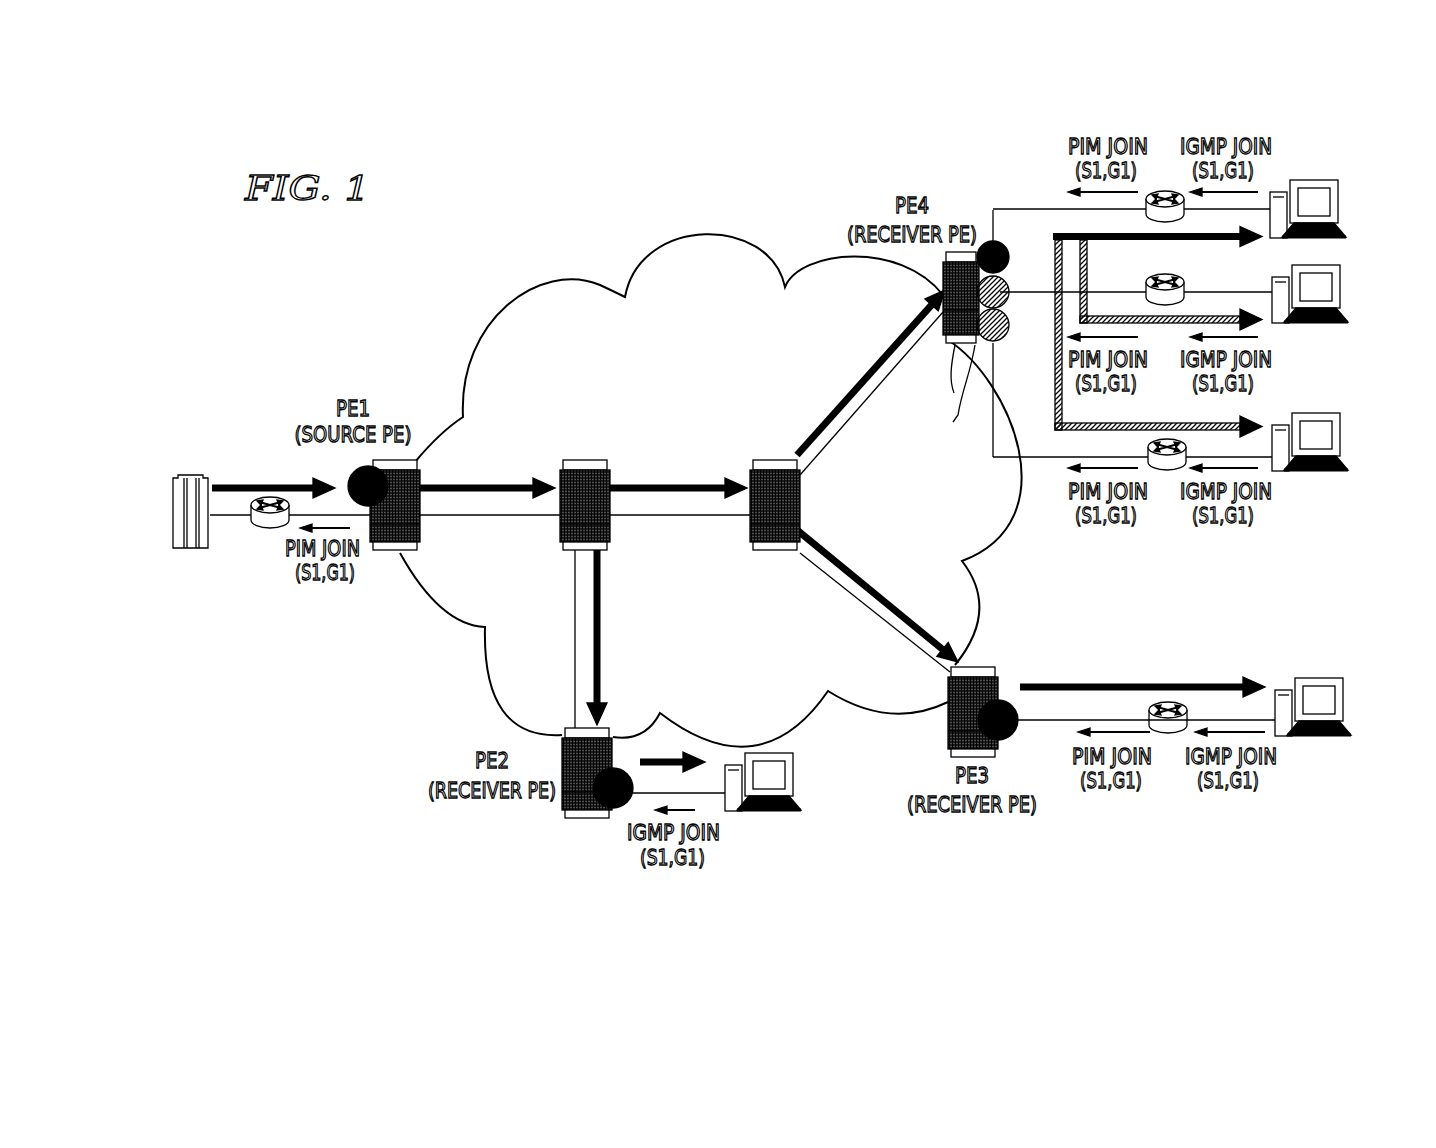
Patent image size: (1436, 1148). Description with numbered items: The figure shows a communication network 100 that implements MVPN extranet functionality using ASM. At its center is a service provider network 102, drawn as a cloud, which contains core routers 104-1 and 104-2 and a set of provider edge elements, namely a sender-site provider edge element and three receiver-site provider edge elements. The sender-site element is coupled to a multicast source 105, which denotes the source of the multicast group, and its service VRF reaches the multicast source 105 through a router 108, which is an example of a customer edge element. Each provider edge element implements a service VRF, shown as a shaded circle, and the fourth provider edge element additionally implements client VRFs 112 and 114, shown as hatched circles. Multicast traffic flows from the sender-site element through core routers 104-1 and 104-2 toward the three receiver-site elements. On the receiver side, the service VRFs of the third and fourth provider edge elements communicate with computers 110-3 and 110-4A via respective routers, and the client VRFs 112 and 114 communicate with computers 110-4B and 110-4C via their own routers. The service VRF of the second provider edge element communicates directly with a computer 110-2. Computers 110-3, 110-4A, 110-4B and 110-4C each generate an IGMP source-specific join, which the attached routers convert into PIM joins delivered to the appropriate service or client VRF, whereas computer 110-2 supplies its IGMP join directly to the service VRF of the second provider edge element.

The communication network 100 is at (360, 270).
The service provider network 102 is at (643, 258).
The core router 104-1 is at (582, 460).
The core router 104-2 is at (768, 460).
The multicast source 105 is at (174, 508).
The router 108 is at (272, 530).
The computer 110-2 is at (790, 774).
The computer 110-3 is at (1343, 695).
The computer 110-4A is at (1340, 207).
The computer 110-4B is at (1342, 291).
The computer 110-4C is at (1342, 437).
The client VRF 112 is at (1031, 278).
The client VRF 114 is at (945, 392).